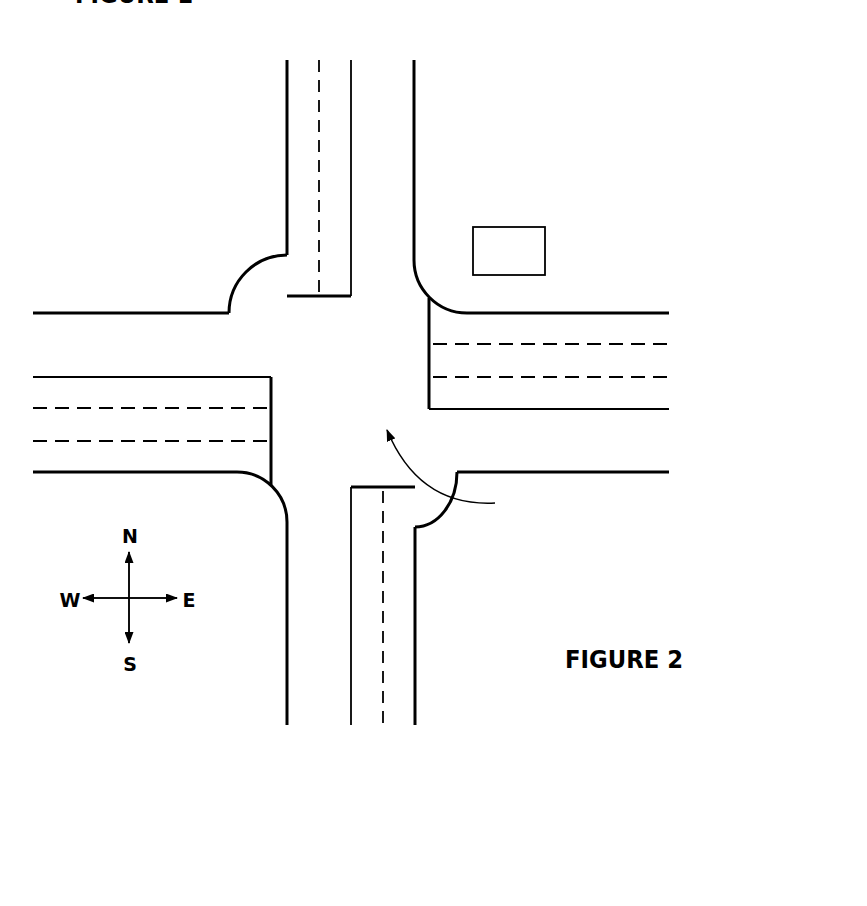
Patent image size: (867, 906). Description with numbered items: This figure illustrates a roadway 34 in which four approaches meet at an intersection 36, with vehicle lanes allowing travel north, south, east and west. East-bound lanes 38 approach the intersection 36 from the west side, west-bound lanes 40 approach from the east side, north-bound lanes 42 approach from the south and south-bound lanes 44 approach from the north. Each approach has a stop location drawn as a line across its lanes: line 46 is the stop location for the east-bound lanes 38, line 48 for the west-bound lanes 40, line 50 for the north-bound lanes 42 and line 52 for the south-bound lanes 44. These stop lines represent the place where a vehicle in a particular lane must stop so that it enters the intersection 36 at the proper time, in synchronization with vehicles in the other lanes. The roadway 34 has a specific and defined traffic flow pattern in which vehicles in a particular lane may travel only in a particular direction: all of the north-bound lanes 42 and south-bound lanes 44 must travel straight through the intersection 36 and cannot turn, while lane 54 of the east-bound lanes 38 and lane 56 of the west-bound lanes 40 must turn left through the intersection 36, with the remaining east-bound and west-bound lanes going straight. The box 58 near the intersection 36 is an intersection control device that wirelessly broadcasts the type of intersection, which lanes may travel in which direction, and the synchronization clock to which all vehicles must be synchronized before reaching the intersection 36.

The roadway 34 is at (192, 202).
The intersection 36 is at (456, 473).
The east-bound lanes 38 is at (128, 493).
The west-bound lanes 40 is at (683, 354).
The north-bound lanes 42 is at (463, 613).
The south-bound lanes 44 is at (322, 40).
The stop line 46 is at (272, 432).
The stop line 48 is at (430, 367).
The stop line 50 is at (393, 487).
The stop line 52 is at (330, 298).
The lane 54 is at (160, 393).
The lane 56 is at (507, 392).
The intersection control device 58 is at (545, 250).